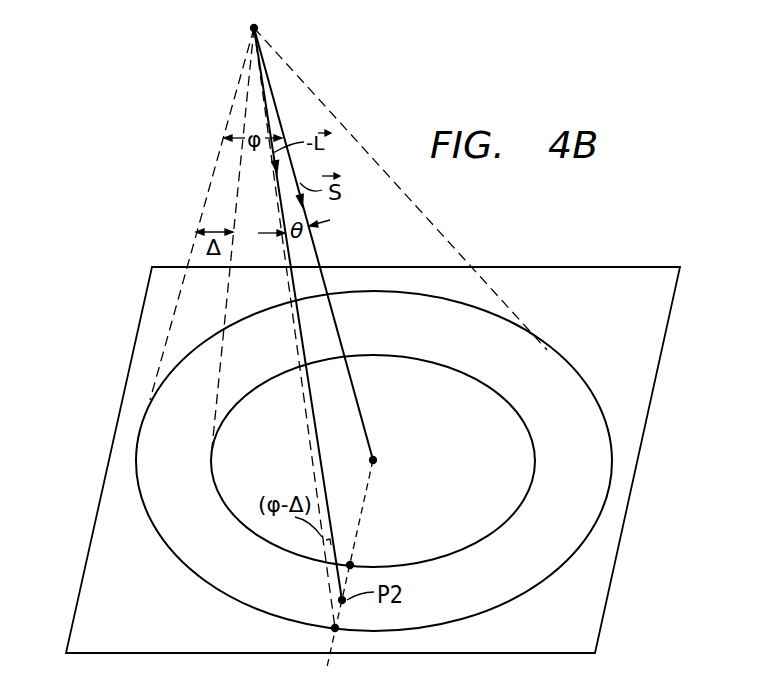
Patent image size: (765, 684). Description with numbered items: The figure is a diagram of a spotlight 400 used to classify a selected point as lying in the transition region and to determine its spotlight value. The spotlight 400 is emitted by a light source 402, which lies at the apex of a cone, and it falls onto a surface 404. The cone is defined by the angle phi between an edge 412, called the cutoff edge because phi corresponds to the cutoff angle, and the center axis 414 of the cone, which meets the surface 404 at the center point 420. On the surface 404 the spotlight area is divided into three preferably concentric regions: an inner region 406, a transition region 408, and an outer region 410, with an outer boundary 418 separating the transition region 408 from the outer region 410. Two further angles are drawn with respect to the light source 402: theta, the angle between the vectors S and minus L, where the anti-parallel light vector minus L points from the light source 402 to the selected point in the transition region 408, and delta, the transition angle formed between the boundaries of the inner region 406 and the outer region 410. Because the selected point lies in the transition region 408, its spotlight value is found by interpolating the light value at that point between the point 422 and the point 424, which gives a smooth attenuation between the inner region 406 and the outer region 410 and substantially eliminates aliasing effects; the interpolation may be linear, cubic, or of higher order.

The spotlight 400 is at (72, 133).
The light source 402 is at (249, 26).
The surface 404 is at (603, 265).
The inner region 406 is at (483, 517).
The transition region 408 is at (555, 552).
The outer region 410 is at (583, 637).
The edge 412 is at (302, 80).
The center axis 414 is at (362, 410).
The outer boundary 418 is at (200, 577).
The center point 420 is at (378, 460).
The point 422 is at (353, 563).
The point 424 is at (333, 625).